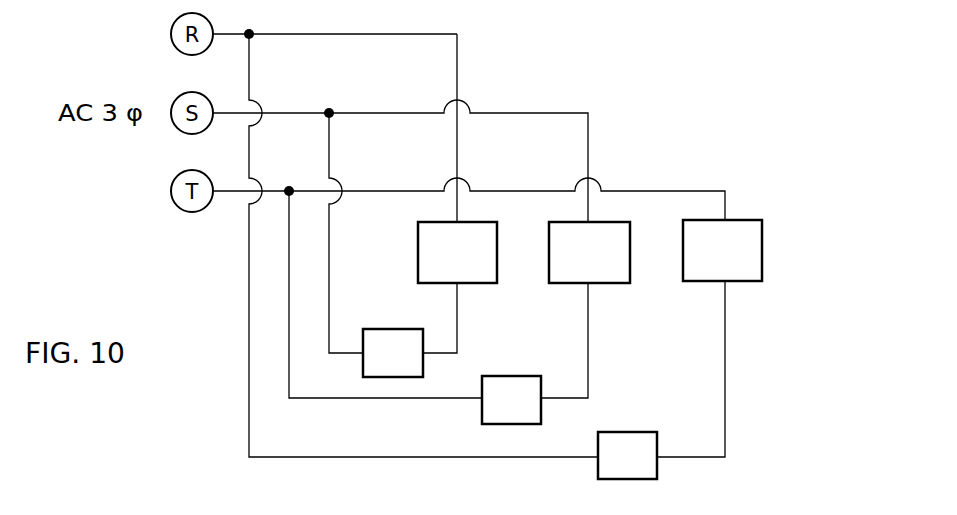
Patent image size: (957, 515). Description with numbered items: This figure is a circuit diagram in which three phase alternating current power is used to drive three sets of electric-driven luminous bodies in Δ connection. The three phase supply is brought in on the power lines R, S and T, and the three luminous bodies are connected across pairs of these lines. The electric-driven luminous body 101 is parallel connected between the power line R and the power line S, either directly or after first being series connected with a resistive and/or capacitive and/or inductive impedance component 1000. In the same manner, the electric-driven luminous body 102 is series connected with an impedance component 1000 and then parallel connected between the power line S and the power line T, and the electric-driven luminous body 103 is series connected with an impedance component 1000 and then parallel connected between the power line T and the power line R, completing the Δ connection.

The electric-driven luminous body 101 is at (457, 252).
The electric-driven luminous body 102 is at (589, 252).
The electric-driven luminous body 103 is at (722, 250).
The resistive and/or capacitive and/or inductive impedance component 1000 is at (410, 329).